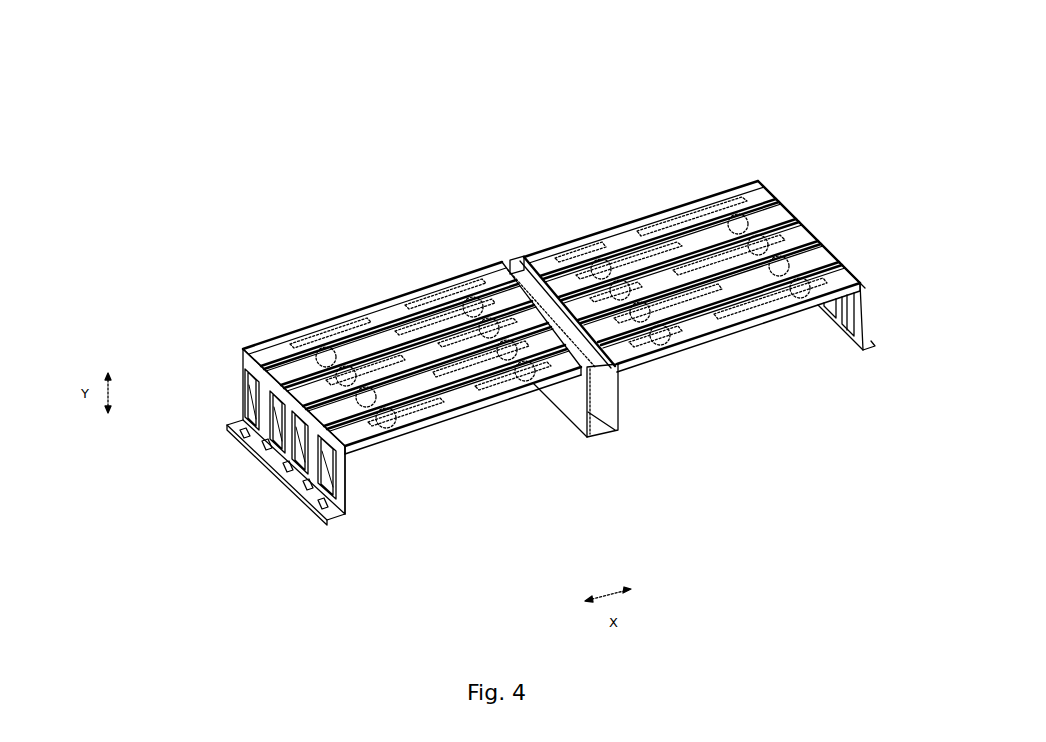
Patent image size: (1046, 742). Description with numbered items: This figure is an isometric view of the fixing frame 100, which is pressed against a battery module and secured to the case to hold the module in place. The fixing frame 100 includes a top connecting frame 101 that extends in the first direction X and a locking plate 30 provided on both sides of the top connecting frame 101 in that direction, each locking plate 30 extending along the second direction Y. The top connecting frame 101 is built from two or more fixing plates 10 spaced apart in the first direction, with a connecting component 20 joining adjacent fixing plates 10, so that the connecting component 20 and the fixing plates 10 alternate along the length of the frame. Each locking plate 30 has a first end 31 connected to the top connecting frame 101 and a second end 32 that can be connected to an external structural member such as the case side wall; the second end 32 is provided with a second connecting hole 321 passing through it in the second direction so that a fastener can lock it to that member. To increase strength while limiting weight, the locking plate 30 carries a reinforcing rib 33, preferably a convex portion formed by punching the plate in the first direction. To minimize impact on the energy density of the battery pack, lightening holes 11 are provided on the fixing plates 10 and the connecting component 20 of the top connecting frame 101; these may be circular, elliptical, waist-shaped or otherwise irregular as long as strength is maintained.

The fixing frame 100 is at (522, 38).
The top connecting frame 101 is at (786, 192).
The fixing plate 10 is at (476, 412).
The lightening hole 11 is at (363, 300).
The connecting component 20 is at (605, 440).
The locking plate 30 is at (240, 364).
The first end 31 is at (350, 449).
The second end 32 is at (330, 517).
The reinforcing rib 33 is at (246, 399).
The second connecting hole 321 is at (275, 456).